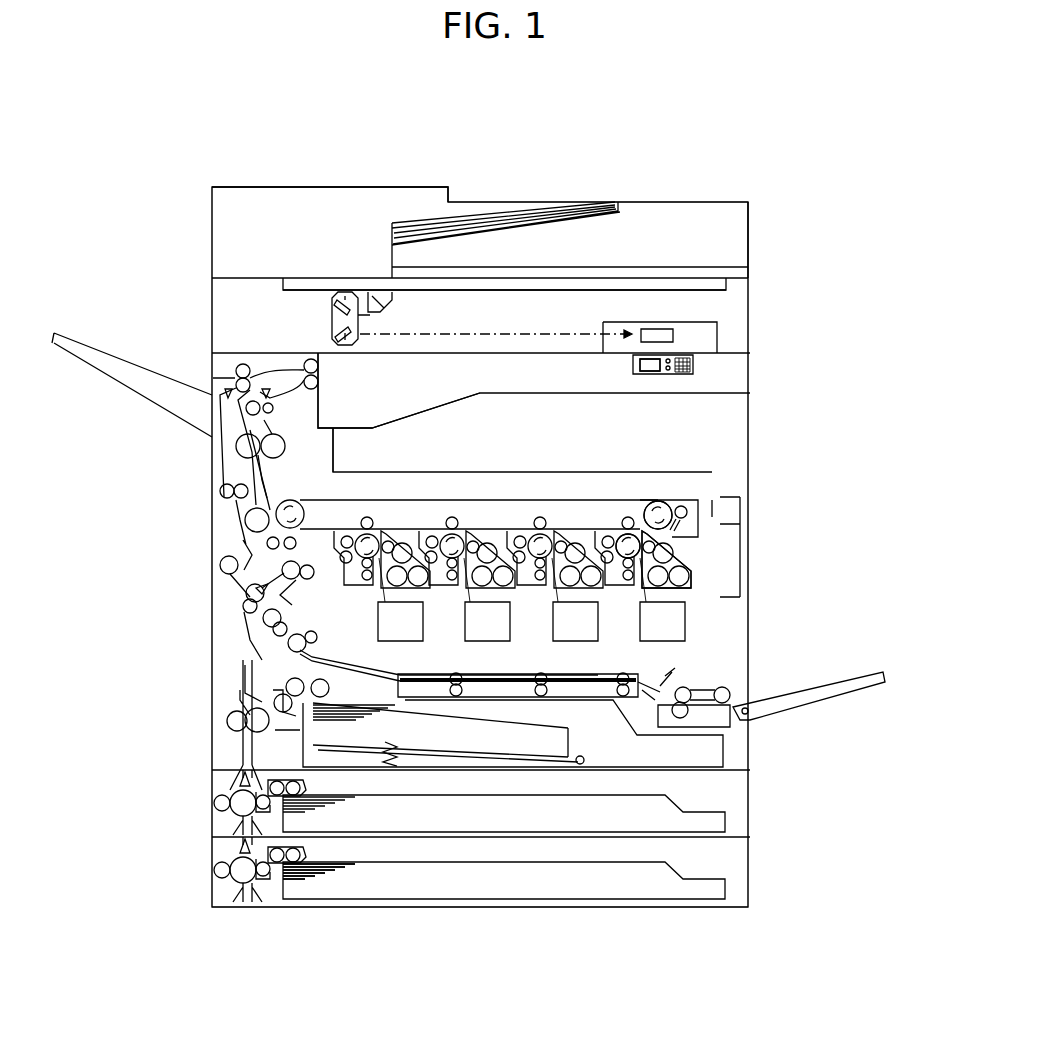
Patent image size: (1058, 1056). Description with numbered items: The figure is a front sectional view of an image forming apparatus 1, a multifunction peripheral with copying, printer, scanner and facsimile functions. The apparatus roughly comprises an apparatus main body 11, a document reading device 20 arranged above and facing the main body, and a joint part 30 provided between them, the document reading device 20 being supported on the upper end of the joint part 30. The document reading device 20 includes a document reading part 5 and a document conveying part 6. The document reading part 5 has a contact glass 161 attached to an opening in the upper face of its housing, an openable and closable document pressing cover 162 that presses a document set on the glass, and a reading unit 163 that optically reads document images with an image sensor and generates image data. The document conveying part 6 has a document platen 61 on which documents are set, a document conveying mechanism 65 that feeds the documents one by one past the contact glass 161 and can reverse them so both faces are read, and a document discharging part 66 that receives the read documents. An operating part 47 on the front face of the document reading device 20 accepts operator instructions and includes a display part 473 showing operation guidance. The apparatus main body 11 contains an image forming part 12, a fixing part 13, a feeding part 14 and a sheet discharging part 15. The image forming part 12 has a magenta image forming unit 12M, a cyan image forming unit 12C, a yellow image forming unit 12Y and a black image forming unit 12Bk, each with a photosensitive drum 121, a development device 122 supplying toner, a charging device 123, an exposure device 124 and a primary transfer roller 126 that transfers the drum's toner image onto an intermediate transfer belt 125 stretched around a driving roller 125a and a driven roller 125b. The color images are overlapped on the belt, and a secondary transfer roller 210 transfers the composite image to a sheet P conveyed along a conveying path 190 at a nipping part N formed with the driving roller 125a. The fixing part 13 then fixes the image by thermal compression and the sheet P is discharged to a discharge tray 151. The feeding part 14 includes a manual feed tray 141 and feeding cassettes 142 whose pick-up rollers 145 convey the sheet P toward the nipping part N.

The image forming apparatus 1 is at (822, 263).
The document reading part 5 is at (185, 309).
The document conveying part 6 is at (598, 193).
The apparatus main body 11 is at (756, 462).
The image forming part 12 is at (708, 539).
The black image forming unit 12Bk is at (371, 519).
The yellow image forming unit 12Y is at (450, 519).
The cyan image forming unit 12C is at (545, 519).
The magenta image forming unit 12M is at (627, 507).
The fixing part 13 is at (234, 447).
The feeding part 14 is at (724, 798).
The sheet discharging part 15 is at (400, 417).
The document reading device 20 is at (752, 302).
The joint part 30 is at (208, 366).
The operating part 47 is at (695, 363).
The document platen 61 is at (656, 206).
The document conveying mechanism 65 is at (312, 256).
The document discharging part 66 is at (665, 264).
The photosensitive drum 121 is at (628, 560).
The development device 122 is at (692, 541).
The charging device 123 is at (598, 641).
The exposure device 124 is at (688, 627).
The intermediate transfer belt 125 is at (654, 503).
The driving roller 125a is at (286, 509).
The driven roller 125b is at (663, 493).
The primary transfer roller 126 is at (626, 517).
The manual feed tray 141 is at (840, 684).
The feeding cassette 142 is at (742, 833).
The pick-up roller 145 is at (300, 852).
The discharge tray 151 is at (353, 428).
The contact glass 161 is at (618, 290).
The document pressing cover 162 is at (557, 274).
The reading unit 163 is at (322, 323).
The conveying path 190 is at (238, 509).
The secondary transfer roller 210 is at (240, 521).
The display part 473 is at (636, 364).
The nipping part N is at (268, 501).
The sheet P is at (558, 725).